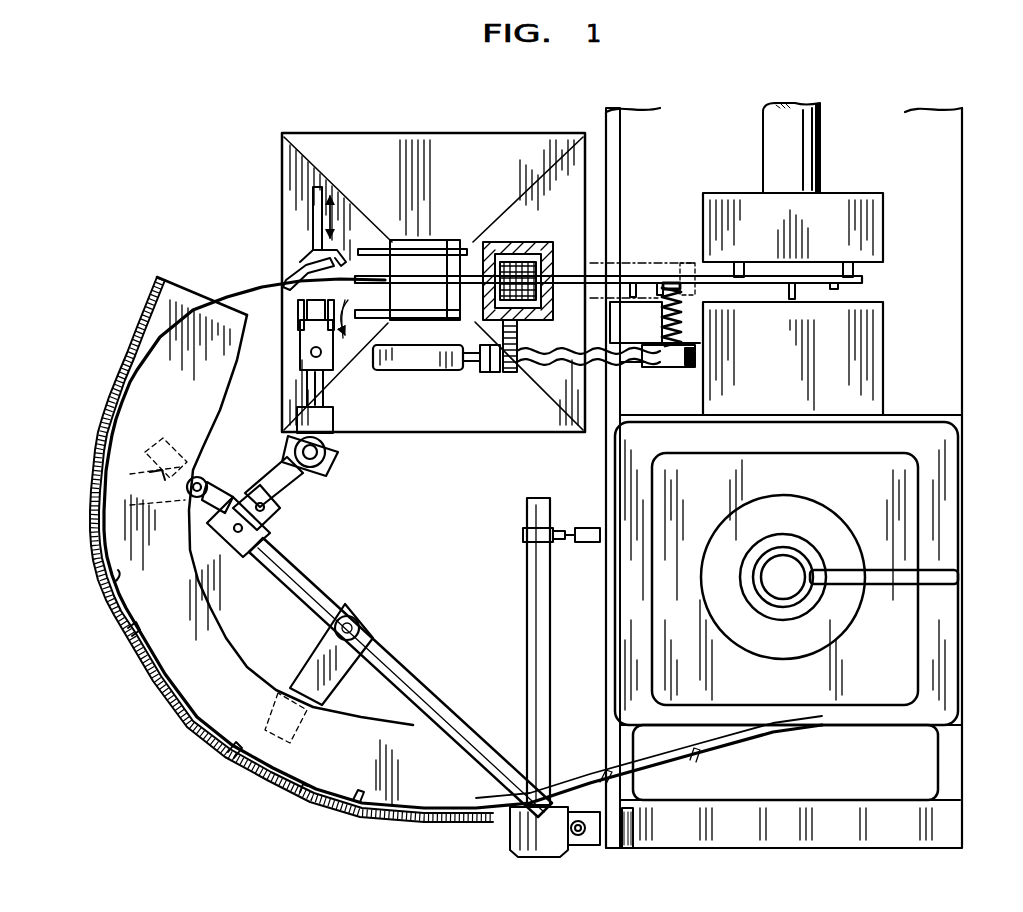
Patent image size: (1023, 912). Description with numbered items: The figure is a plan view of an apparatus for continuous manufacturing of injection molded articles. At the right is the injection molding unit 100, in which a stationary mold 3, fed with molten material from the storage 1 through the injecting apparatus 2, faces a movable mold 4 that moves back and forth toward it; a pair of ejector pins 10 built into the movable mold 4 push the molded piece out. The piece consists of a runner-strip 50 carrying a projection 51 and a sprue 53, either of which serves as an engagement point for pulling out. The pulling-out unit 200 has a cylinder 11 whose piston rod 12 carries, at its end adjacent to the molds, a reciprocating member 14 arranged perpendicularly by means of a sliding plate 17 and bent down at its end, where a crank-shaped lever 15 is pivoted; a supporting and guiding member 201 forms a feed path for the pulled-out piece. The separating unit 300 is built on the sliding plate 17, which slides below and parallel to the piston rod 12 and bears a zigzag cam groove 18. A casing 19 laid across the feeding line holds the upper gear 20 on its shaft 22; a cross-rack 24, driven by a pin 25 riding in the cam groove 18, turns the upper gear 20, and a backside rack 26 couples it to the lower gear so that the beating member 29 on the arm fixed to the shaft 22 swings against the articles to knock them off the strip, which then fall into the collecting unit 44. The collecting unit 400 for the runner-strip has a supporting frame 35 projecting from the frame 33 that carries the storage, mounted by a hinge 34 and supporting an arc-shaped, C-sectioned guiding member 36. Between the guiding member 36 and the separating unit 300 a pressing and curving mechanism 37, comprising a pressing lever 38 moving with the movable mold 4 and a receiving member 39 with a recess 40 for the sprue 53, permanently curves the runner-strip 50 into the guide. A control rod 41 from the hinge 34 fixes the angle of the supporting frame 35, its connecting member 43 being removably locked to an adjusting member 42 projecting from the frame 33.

The storage 1 is at (912, 762).
The injecting apparatus 2 is at (905, 525).
The stationary mold 3 is at (860, 350).
The movable mold 4 is at (870, 205).
The ejector pins 10 is at (745, 270).
The cylinder 11 is at (402, 362).
The piston rod 12 is at (664, 372).
The reciprocating member 14 is at (690, 305).
The lever 15 is at (683, 262).
The sliding plate 17 is at (552, 360).
The cam groove 18 is at (622, 370).
The casing 19 is at (590, 320).
The upper gear 20 is at (520, 256).
The upper shaft 22 is at (472, 242).
The cross-rack 24 is at (486, 372).
The pin 25 is at (510, 372).
The backside rack 26 is at (545, 243).
The beating member 29 is at (360, 250).
The frame 33 is at (628, 835).
The hinge 34 is at (578, 838).
The supporting frame 35 is at (420, 690).
The guiding member 36 is at (187, 735).
The pressing and curving mechanism 37 is at (338, 312).
The pressing lever 38 is at (300, 262).
The receiving member 39 is at (300, 362).
The recess 40 is at (300, 330).
The control rod 41 is at (534, 628).
The adjusting member 42 is at (590, 528).
The connecting member 43 is at (524, 535).
The collecting unit 44 is at (337, 133).
The runner-strip 50 is at (238, 290).
The projection 51 is at (660, 278).
The sprue 53 is at (795, 300).
The injection molding unit 100 is at (898, 262).
The pulling-out unit 200 is at (688, 323).
The supporting and guiding member 201 is at (615, 260).
The separating unit 300 is at (422, 232).
The collecting unit 400 is at (145, 278).